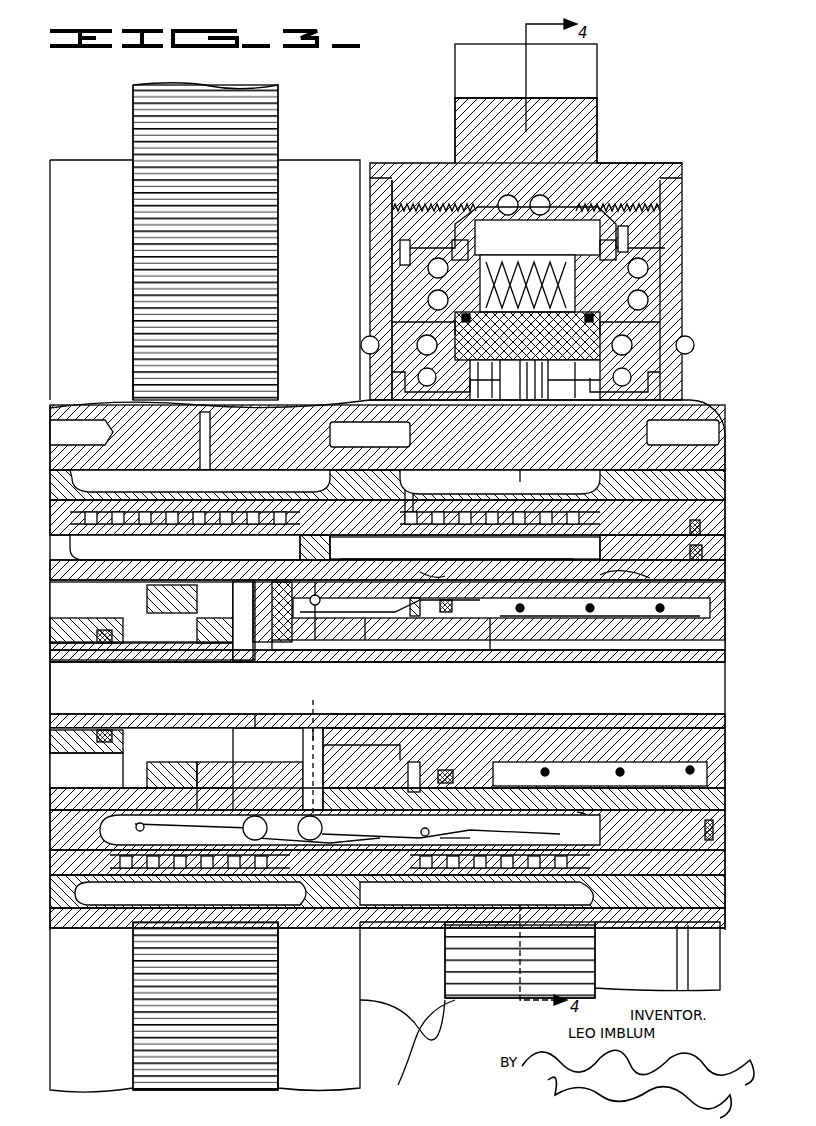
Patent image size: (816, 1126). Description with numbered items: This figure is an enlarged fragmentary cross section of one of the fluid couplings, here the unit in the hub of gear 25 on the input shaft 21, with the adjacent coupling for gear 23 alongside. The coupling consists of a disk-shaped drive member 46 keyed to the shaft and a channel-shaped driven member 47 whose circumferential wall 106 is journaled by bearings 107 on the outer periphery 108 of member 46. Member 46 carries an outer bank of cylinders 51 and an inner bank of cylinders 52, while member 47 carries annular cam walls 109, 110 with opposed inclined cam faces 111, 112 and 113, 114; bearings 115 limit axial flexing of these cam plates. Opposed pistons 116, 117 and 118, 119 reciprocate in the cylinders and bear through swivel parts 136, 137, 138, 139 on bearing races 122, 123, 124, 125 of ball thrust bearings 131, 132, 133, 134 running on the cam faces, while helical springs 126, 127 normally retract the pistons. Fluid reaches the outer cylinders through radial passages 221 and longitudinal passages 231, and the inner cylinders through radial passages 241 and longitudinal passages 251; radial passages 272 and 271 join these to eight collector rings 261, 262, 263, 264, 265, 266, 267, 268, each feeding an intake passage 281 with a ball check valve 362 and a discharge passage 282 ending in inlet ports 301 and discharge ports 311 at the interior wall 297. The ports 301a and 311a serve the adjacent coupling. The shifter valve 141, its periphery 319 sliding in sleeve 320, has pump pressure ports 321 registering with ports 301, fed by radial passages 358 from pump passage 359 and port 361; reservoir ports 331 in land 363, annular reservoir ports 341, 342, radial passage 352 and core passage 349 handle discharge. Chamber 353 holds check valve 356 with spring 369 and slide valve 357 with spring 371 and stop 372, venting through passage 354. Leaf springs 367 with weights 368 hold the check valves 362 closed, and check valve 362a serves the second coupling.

The input shaft 21 is at (708, 490).
The gear 23 is at (272, 118).
The gear 25 is at (588, 87).
The drive member 46 is at (540, 351).
The driven member 47 is at (640, 162).
The cylinders of outer bank 51 is at (585, 236).
The cylinders of inner bank 52 is at (533, 388).
The circumferentially extending wall 106 is at (606, 173).
The bearings 107 is at (512, 197).
The outer periphery 108 is at (545, 197).
The annular cam wall 109 is at (372, 237).
The annular cam wall 110 is at (665, 233).
The cam face 111 is at (428, 266).
The cam face 112 is at (650, 251).
The cam face 113 is at (405, 324).
The cam face 114 is at (632, 333).
The bearings 115 is at (361, 343).
The piston 116 is at (482, 328).
The piston 117 is at (575, 330).
The piston 118 is at (490, 388).
The piston 119 is at (553, 388).
The bearing race 122 is at (396, 388).
The bearing race 123 is at (655, 387).
The bearing race 124 is at (392, 292).
The bearing race 125 is at (655, 227).
The helical spring 126 is at (541, 266).
The helical spring 127 is at (535, 380).
The ball thrust bearing 131 is at (450, 272).
The ball thrust bearing 132 is at (648, 274).
The ball thrust bearing 133 is at (417, 360).
The ball thrust bearing 134 is at (640, 362).
The swivel part 136 is at (428, 301).
The swivel part 137 is at (648, 296).
The swivel part 138 is at (472, 386).
The swivel part 139 is at (578, 388).
The shifter valve 141 is at (70, 662).
The radial passage 221 is at (506, 930).
The longitudinal passage 231 is at (440, 914).
The radial passage 241 is at (521, 482).
The longitudinal passage 251 is at (510, 490).
The fluid collecting ring 261 is at (370, 548).
The fluid collecting ring 262 is at (400, 551).
The fluid collecting ring 263 is at (427, 551).
The fluid collecting ring 264 is at (454, 551).
The fluid collecting ring 265 is at (481, 551).
The fluid collecting ring 266 is at (508, 551).
The fluid collecting ring 267 is at (534, 551).
The fluid collecting ring 268 is at (561, 551).
The radial passage 271 is at (409, 503).
The radial passage 272 is at (412, 882).
The intake passage 281 is at (583, 897).
The discharge passage 282 is at (320, 555).
The interior peripheral wall 297 is at (672, 577).
The inlet port 301 is at (320, 782).
The inlet port 301a is at (250, 818).
The discharge port 311 is at (289, 605).
The discharge port 311a is at (255, 566).
The external periphery 319 is at (704, 552).
The sleeve 320 is at (702, 538).
The pump pressure port 321 is at (383, 718).
The reservoir connected port 331 is at (333, 587).
The annular reservoir valve port 341 is at (125, 558).
The annular reservoir valve port 342 is at (432, 576).
The central hollow core 349 is at (157, 683).
The radial passage 352 is at (244, 662).
The valve chamber 353 is at (365, 640).
The radial passage 354 is at (490, 650).
The check valve 356 is at (314, 640).
The slide valve 357 is at (463, 618).
The radial passage 358 is at (318, 738).
The pump pressure fluid passage 359 is at (253, 720).
The port 361 is at (102, 782).
The ball check valve 362 is at (325, 832).
The ball check valve 362a is at (240, 832).
The land 363 is at (343, 548).
The leaf spring 367 is at (440, 839).
The weight 368 is at (455, 831).
The closing spring 369 is at (390, 610).
The closure spring 371 is at (662, 612).
The stop 372 is at (418, 618).